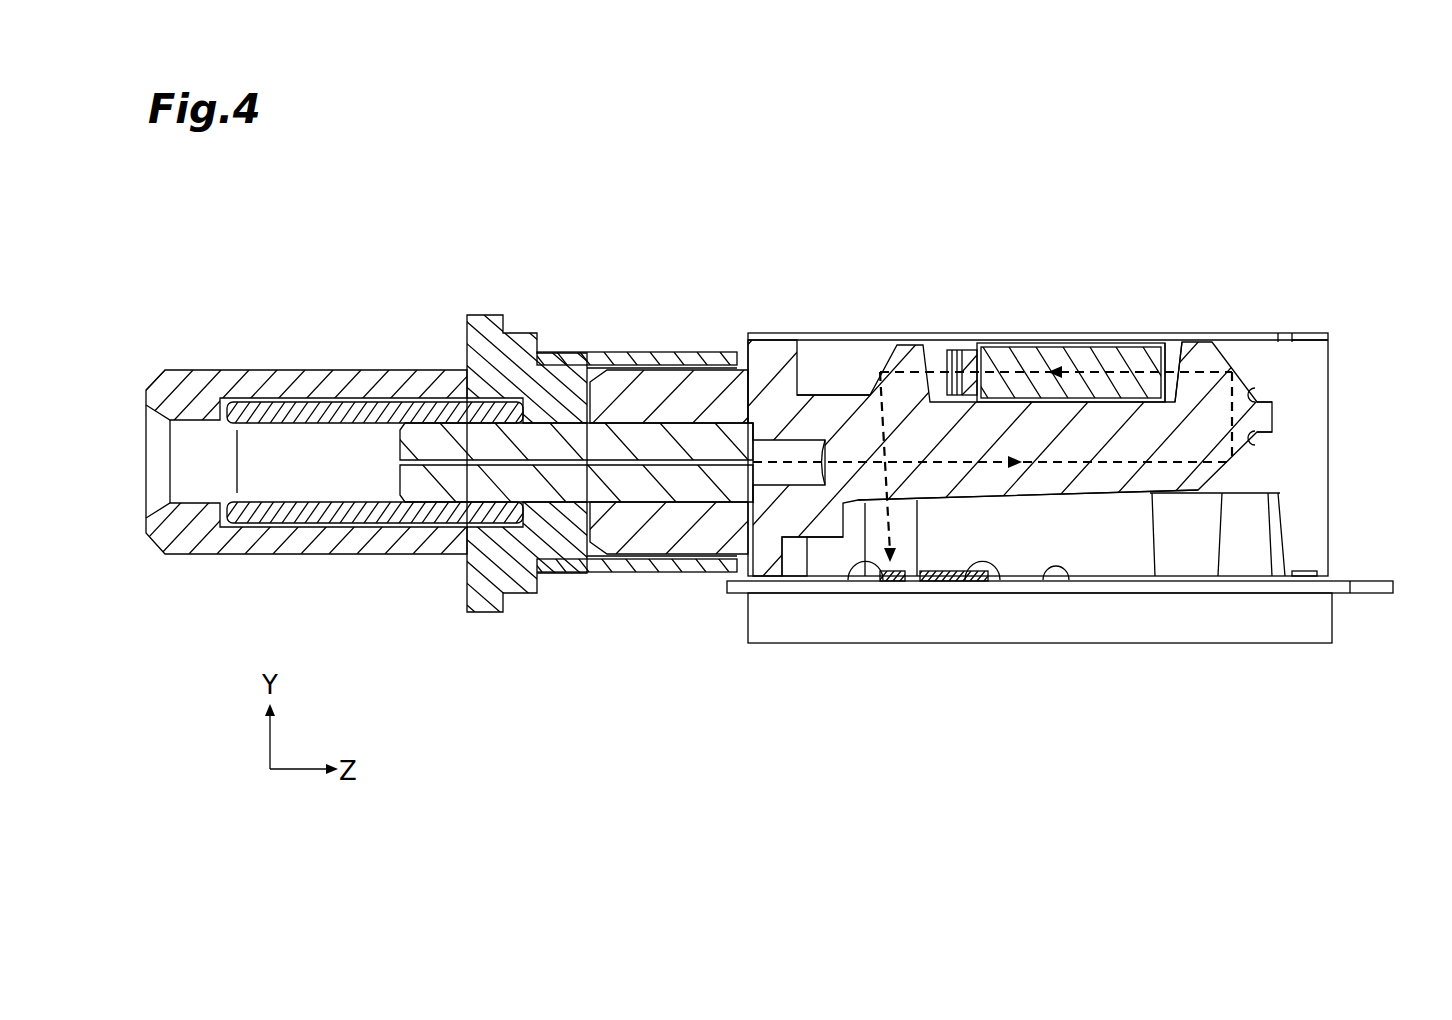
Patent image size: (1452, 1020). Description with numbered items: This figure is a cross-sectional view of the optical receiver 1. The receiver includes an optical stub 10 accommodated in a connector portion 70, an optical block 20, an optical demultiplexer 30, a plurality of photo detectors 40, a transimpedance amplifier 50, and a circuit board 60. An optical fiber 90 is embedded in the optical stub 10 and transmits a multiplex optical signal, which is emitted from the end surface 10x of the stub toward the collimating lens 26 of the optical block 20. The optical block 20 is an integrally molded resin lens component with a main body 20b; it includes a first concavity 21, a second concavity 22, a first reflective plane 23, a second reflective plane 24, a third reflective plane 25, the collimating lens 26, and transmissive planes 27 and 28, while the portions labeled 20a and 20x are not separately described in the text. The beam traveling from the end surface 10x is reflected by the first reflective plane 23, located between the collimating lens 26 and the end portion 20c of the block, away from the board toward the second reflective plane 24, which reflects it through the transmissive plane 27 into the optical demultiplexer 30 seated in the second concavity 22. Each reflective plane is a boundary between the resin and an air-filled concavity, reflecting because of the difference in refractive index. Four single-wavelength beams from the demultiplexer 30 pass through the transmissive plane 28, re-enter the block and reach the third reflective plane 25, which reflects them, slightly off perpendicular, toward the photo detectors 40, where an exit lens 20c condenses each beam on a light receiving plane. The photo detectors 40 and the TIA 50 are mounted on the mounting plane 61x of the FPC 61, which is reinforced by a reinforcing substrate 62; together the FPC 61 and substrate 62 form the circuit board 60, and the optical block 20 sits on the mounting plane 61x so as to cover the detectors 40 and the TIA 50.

The optical receiver 1 is at (980, 230).
The optical stub 10 is at (432, 500).
The end surface 10x is at (765, 412).
The optical block 20 is at (1310, 332).
The housing insertion portion 20a is at (657, 572).
The main body 20b is at (768, 333).
The exit lens 20c is at (1330, 345).
The housing bottom surface 20x is at (895, 500).
The first concavity 21 is at (652, 432).
The second concavity 22 is at (1170, 340).
The first reflective plane 23 is at (1255, 436).
The second reflective plane 24 is at (1255, 395).
The third reflective plane 25 is at (866, 385).
The collimating lens 26 is at (770, 540).
The transmissive plane 27 is at (1174, 393).
The transmissive plane 28 is at (945, 345).
The optical demultiplexer 30 is at (1060, 348).
The photo detectors 40 is at (855, 582).
The Transimpedance Amplifier 50 is at (975, 582).
The circuit board 60 is at (1220, 716).
The FPC 61 is at (1200, 593).
The mounting plane 61x is at (1068, 578).
The reinforcing substrate 62 is at (1133, 628).
The connector portion 70 is at (245, 370).
The optical fiber 90 is at (552, 465).